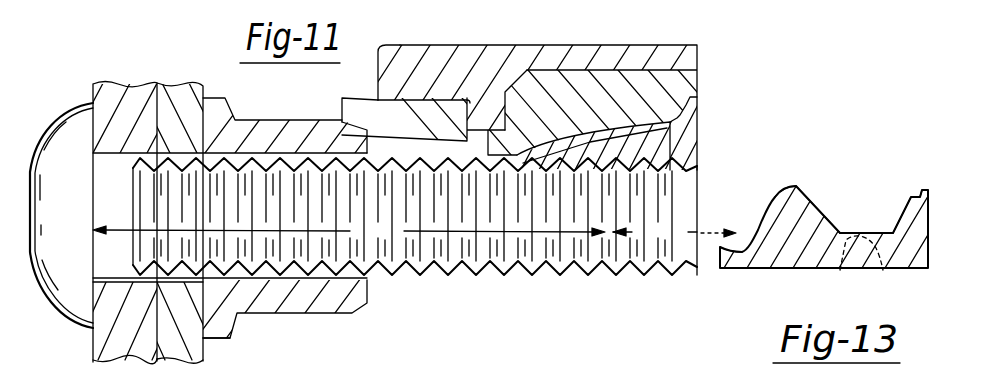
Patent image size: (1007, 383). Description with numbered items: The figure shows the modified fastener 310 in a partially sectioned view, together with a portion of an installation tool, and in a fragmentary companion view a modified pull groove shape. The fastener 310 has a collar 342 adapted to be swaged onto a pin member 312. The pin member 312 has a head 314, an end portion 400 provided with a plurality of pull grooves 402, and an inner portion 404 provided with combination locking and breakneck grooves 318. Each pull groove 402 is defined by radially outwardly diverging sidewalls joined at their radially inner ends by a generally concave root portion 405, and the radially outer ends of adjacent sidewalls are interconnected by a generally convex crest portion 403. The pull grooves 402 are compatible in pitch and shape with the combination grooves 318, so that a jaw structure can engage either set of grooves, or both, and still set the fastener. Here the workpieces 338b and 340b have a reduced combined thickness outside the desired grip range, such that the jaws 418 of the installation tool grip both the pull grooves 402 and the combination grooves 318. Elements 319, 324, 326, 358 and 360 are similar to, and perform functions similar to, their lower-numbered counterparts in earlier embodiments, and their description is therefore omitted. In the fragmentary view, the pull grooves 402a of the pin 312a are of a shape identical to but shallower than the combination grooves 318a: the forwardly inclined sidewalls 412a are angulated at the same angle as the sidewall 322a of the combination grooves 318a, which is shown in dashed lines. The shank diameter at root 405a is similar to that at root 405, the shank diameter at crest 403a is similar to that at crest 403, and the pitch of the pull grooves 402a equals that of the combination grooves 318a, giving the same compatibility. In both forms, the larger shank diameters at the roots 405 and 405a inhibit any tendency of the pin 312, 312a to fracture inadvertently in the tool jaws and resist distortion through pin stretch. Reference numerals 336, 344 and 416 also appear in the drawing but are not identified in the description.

In FIG. 11, the fastener 310 is at (230, 62).
In FIG. 11, the pin member 312 is at (400, 284).
In FIG. 13, the pin 312a is at (749, 277).
In FIG. 11, the head 314 is at (61, 112).
In FIG. 11, the combination locking and breakneck grooves 318 is at (216, 382).
In FIG. 13, the combination locking and breakneck grooves 318 is at (745, 228).
In FIG. 13, the combination grooves 318a is at (878, 277).
In FIG. 11, the counterpart element 319 is at (122, 207).
In FIG. 13, the sidewall 322a is at (832, 282).
In FIG. 11, the counterpart element 324 is at (430, 278).
In FIG. 11, the counterpart element 326 is at (527, 278).
In FIG. 11, the head end 336 is at (177, 379).
In FIG. 11, the workpiece 338b is at (150, 33).
In FIG. 11, the workpiece 340b is at (183, 87).
In FIG. 11, the collar 342 is at (232, 115).
In FIG. 11, the nut flange 344 is at (385, 98).
In FIG. 11, the counterpart element 358 is at (417, 141).
In FIG. 11, the counterpart element 360 is at (482, 44).
In FIG. 11, the end portion 400 is at (674, 236).
In FIG. 11, the pull grooves 402 is at (650, 278).
In FIG. 13, the pull grooves 402a is at (836, 160).
In FIG. 11, the crest portion 403 is at (680, 142).
In FIG. 13, the crest 403a is at (920, 190).
In FIG. 11, the inner portion 404 is at (395, 216).
In FIG. 11, the root portion 405 is at (655, 162).
In FIG. 13, the root 405a is at (883, 190).
In FIG. 13, the forwardly inclined sidewalls 412a is at (792, 186).
In FIG. 11, the lock portion 416 is at (590, 382).
In FIG. 11, the jaws 418 is at (697, 103).